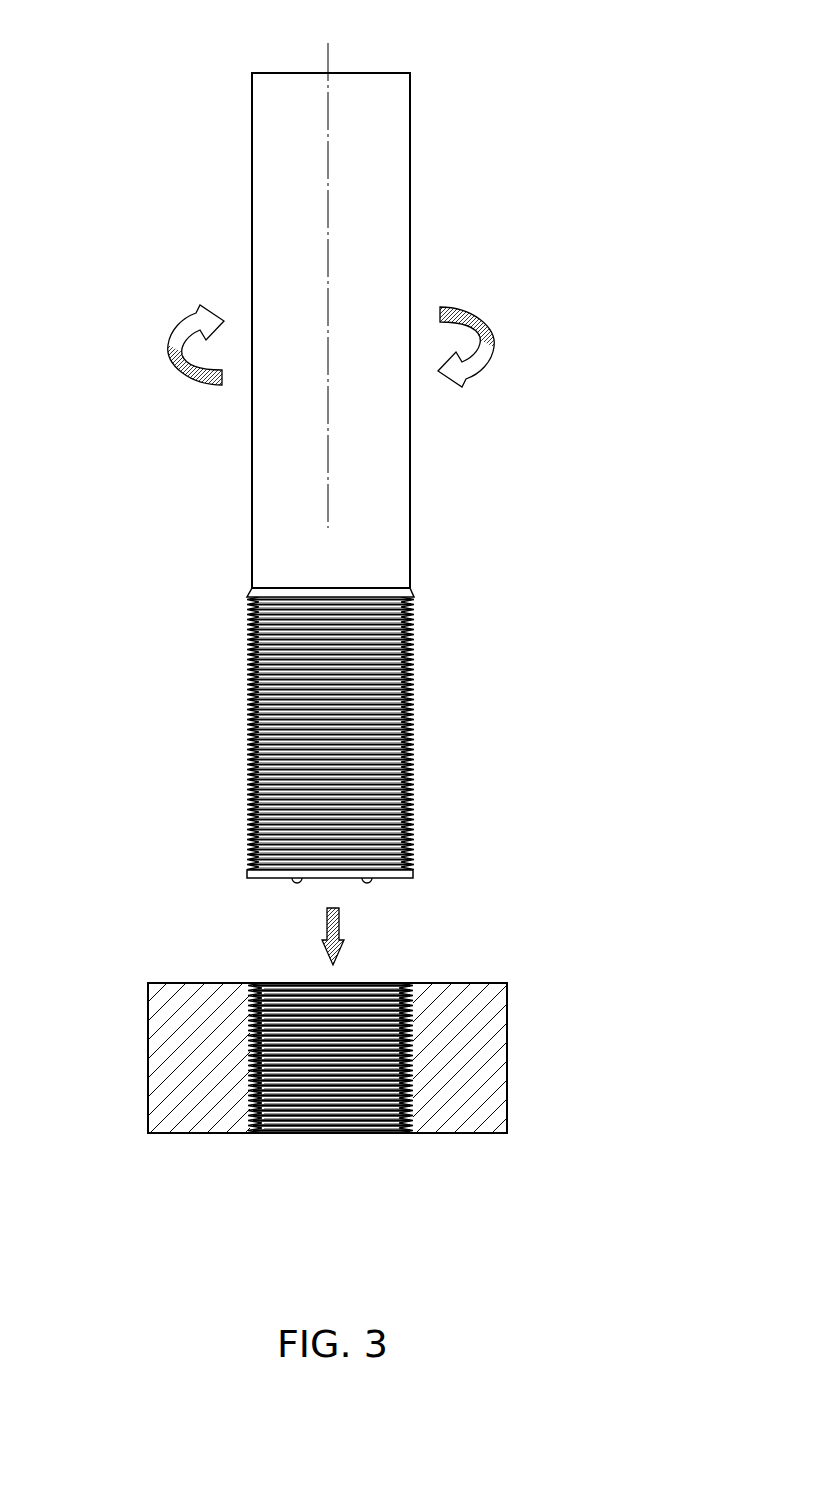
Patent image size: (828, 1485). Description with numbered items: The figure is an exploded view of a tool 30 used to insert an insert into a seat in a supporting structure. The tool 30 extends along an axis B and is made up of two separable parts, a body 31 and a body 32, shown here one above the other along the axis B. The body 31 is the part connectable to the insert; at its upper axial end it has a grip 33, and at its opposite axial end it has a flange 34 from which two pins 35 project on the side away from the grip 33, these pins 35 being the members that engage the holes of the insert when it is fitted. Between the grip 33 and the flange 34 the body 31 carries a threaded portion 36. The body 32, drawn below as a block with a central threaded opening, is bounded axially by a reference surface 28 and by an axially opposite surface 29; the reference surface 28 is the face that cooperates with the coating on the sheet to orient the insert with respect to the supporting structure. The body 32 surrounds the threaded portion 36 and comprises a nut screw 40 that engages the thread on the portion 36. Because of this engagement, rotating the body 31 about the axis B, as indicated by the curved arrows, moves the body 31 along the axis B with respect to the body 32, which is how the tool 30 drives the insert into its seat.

The axis B is at (328, 45).
The reference surface 28 is at (166, 990).
The axially opposite surface 29 is at (478, 983).
The tool 30 is at (382, 514).
The body 31 is at (268, 302).
The body 32 is at (388, 1065).
The grip 33 is at (400, 163).
The flange 34 is at (412, 873).
The pins 35 is at (297, 883).
The threaded portion 36 is at (248, 683).
The nut screw 40 is at (275, 1088).